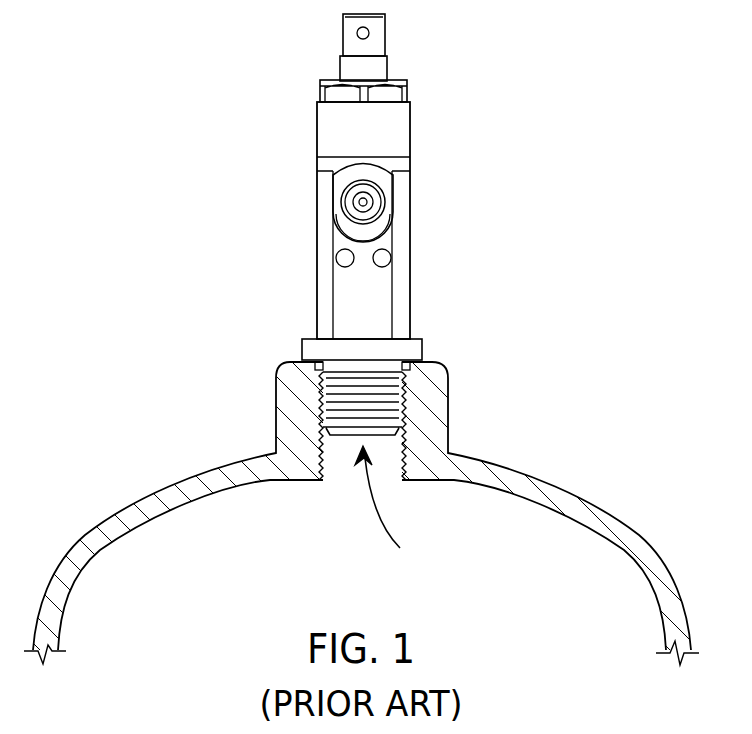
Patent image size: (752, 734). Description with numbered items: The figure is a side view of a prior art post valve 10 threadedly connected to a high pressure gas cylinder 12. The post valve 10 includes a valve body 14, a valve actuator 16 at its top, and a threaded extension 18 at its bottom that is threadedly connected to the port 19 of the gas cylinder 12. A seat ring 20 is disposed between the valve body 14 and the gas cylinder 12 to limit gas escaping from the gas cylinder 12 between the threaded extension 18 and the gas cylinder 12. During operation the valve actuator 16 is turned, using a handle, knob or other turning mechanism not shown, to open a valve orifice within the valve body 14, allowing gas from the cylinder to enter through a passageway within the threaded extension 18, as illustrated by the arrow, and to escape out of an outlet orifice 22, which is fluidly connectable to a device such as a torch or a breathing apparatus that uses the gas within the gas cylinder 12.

The post valve 10 is at (468, 127).
The high pressure gas cylinder 12 is at (523, 467).
The valve body 14 is at (383, 228).
The valve actuator 16 is at (385, 61).
The threaded extension 18 is at (403, 400).
The port 19 is at (325, 360).
The seat ring 20 is at (406, 348).
The outlet orifice 22 is at (359, 202).